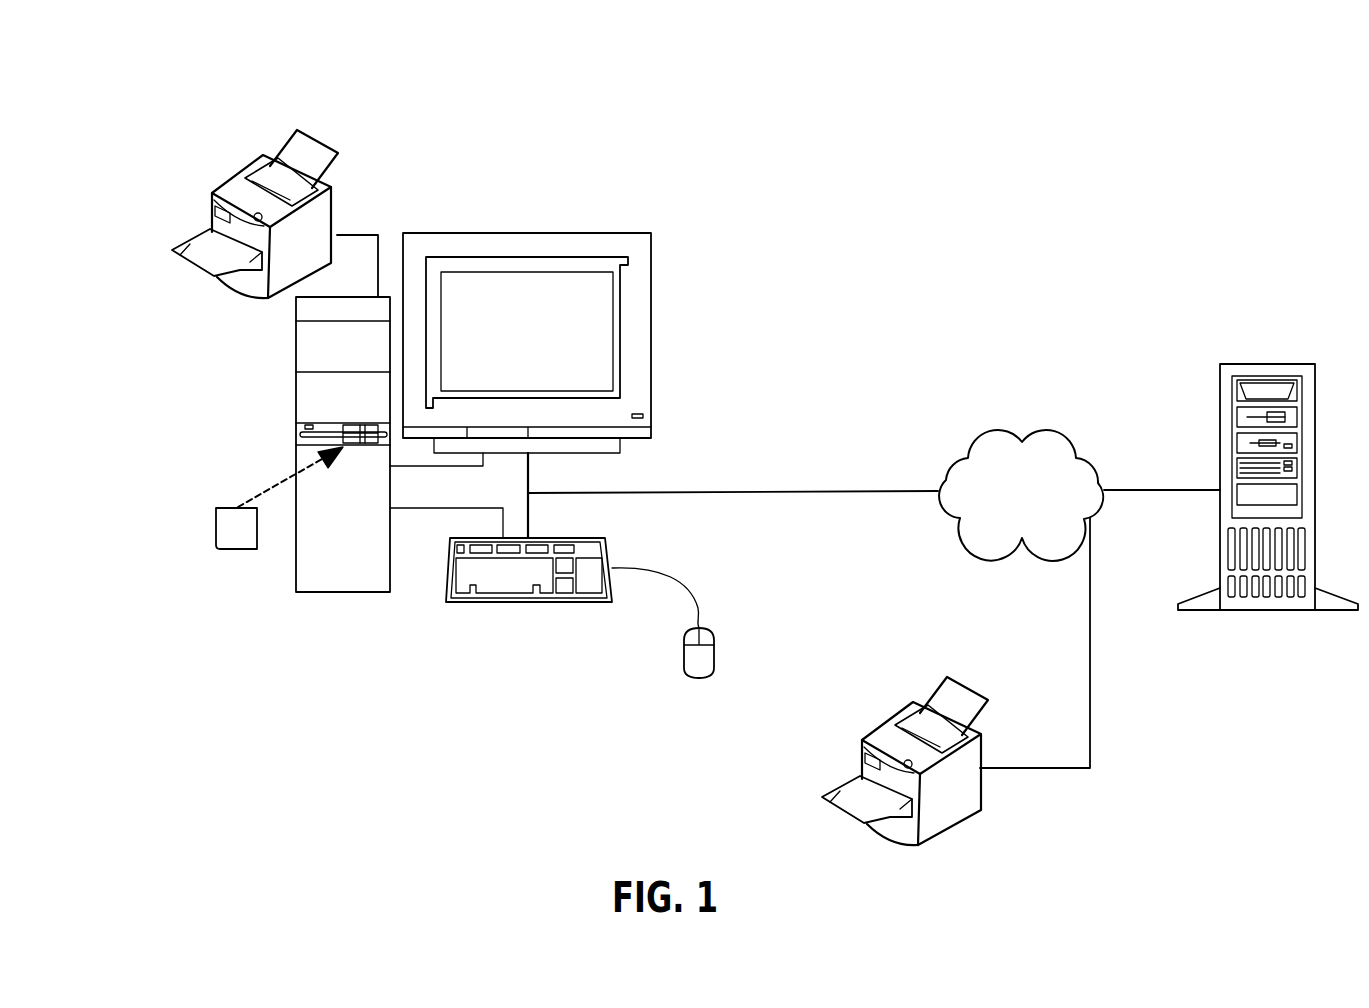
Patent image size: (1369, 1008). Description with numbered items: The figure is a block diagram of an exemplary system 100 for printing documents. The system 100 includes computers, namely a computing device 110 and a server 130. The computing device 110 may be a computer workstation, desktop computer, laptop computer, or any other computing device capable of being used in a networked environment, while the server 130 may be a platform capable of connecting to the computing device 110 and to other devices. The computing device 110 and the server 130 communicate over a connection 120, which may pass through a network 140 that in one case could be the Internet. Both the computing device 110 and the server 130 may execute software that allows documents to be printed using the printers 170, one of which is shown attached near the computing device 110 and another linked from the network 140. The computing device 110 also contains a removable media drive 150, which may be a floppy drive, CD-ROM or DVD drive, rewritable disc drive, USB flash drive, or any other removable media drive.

The system 100 is at (350, 36).
The computing device 110 is at (527, 232).
The connection 120 is at (733, 479).
The server 130 is at (1268, 362).
The network 140 is at (1041, 501).
The removable media drive 150 is at (279, 516).
The printers 170 is at (174, 250).